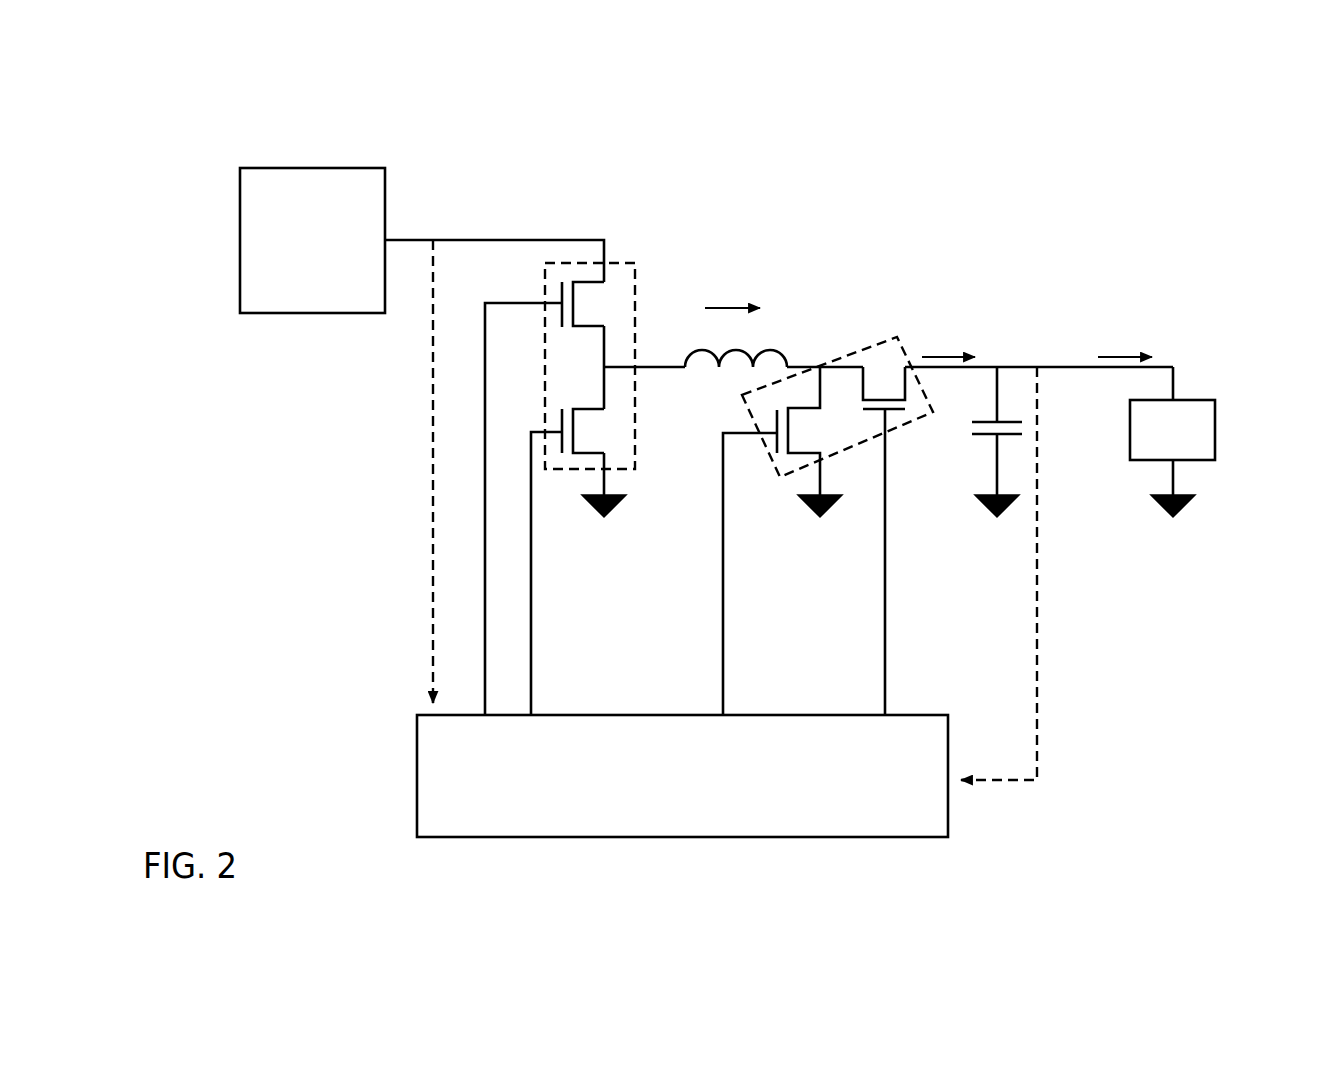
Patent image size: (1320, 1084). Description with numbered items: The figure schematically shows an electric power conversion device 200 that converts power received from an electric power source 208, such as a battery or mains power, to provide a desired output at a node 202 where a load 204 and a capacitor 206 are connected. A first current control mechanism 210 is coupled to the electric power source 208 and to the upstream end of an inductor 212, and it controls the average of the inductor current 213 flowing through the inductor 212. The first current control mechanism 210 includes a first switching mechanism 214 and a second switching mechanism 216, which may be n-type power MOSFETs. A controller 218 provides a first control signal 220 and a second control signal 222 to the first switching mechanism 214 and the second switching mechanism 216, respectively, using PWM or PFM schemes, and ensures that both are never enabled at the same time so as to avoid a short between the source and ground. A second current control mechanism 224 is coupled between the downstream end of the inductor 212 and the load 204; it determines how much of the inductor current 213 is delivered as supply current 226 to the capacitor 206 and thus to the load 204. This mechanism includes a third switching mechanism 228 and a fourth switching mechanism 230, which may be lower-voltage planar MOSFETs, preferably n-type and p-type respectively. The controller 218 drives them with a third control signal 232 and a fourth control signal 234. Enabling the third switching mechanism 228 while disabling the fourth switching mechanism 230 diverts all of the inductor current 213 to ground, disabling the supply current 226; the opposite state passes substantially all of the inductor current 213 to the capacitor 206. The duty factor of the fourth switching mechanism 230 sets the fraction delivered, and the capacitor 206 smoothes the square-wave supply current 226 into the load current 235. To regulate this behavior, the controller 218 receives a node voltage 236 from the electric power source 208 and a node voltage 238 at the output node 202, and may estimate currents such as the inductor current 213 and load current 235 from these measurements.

The electric power conversion device 200 is at (1210, 96).
The node 202 is at (1050, 367).
The load 204 is at (1205, 447).
The capacitor 206 is at (966, 451).
The electric power source 208 is at (377, 305).
The first current control mechanism 210 is at (612, 263).
The inductor 212 is at (736, 342).
The inductor current 213 is at (740, 293).
The first switching mechanism 214 is at (616, 303).
The second switching mechanism 216 is at (577, 463).
The controller 218 is at (938, 821).
The first control signal 220 is at (485, 340).
The second control signal 222 is at (531, 455).
The second current control mechanism 224 is at (907, 335).
The supply current 226 is at (976, 343).
The third switching mechanism 228 is at (784, 463).
The fourth switching mechanism 230 is at (878, 352).
The third control signal 232 is at (723, 617).
The fourth control signal 234 is at (885, 562).
The load current 235 is at (1146, 343).
The node voltage 236 is at (433, 400).
The node voltage 238 is at (1037, 567).